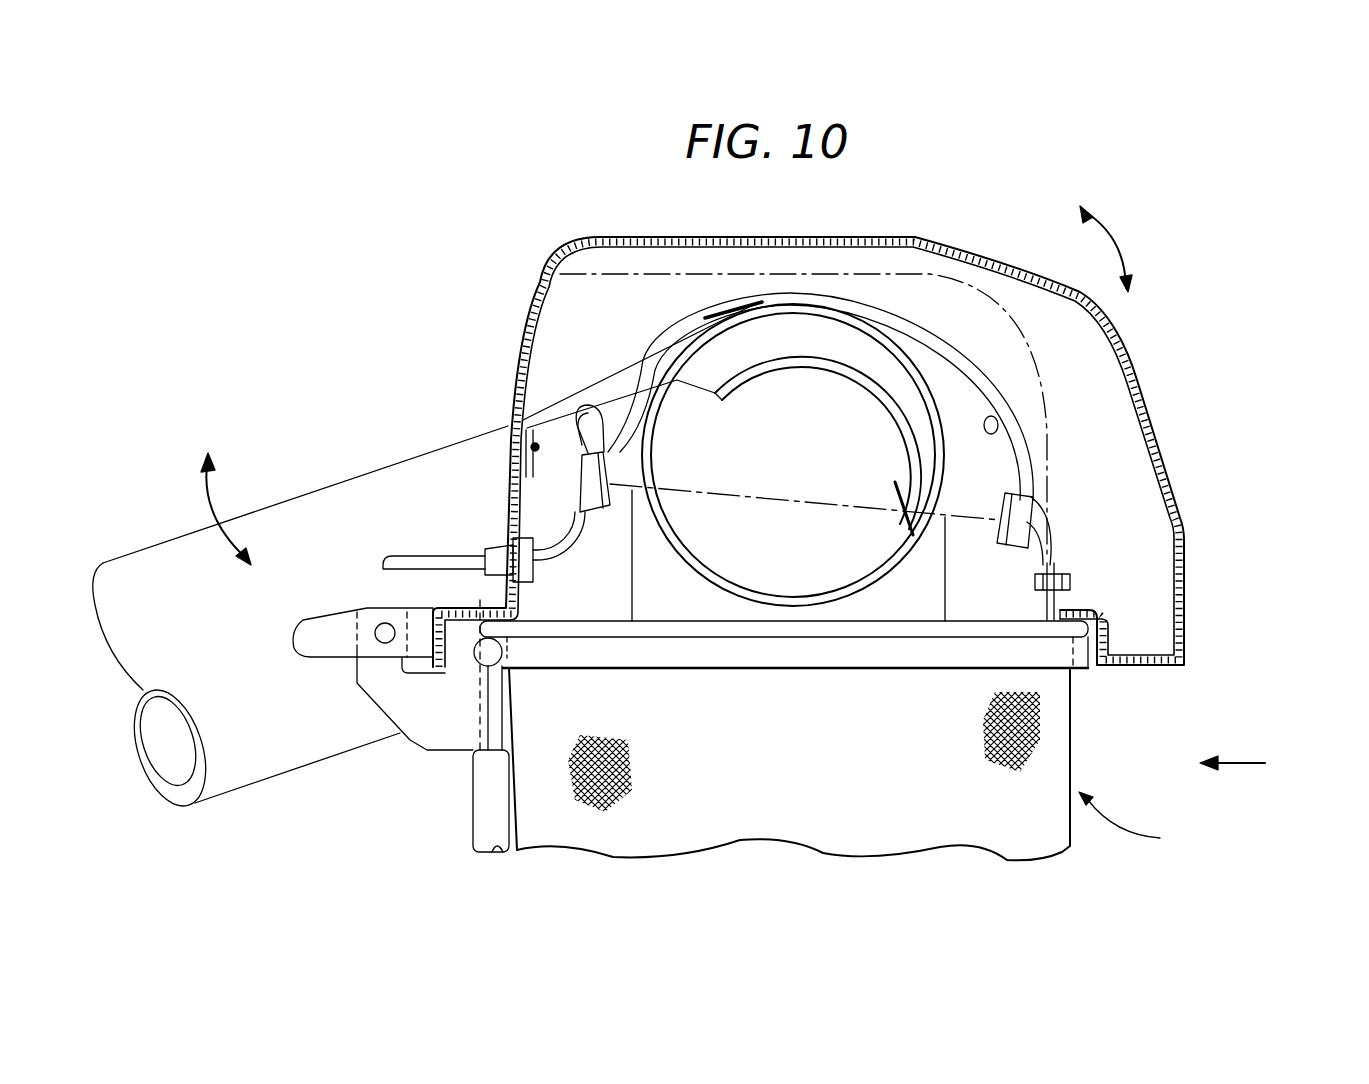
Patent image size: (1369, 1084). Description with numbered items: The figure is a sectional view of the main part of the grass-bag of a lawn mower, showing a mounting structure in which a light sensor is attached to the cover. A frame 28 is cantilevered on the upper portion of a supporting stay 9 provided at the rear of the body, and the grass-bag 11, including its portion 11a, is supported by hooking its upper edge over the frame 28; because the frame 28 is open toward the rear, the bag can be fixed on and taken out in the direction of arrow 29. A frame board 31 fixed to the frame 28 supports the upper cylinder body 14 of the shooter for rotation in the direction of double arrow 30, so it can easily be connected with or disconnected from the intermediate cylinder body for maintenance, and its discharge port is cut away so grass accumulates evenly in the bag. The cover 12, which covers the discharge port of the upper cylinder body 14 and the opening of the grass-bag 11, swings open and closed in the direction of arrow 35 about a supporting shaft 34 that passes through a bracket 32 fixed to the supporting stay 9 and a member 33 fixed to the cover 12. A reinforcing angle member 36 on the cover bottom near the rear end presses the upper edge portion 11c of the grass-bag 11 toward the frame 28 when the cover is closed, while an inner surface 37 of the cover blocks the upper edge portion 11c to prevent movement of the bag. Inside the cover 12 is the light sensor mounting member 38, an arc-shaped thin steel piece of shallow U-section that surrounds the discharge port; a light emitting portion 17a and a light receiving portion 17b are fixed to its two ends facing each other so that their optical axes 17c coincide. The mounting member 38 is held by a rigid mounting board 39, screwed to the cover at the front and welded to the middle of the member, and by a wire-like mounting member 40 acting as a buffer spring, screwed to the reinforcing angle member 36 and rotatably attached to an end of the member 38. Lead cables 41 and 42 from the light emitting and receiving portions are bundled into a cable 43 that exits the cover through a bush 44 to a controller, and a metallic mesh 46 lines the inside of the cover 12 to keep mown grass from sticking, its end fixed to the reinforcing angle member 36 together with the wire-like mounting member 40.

The supporting stay 9 is at (470, 795).
The grass-bag 11 is at (852, 764).
The grass-bag portion 11a is at (883, 847).
The upper edge portion of grass-bag 11c is at (1023, 630).
The cover 12 is at (1135, 364).
The upper cylinder body 14 is at (748, 382).
The light emitting portion 17a is at (578, 483).
The light receiving portion 17b is at (1030, 512).
The optical axis 17c is at (781, 503).
The frame 28 is at (843, 660).
The arrow 29 is at (1263, 762).
The double arrow 30 is at (226, 507).
The frame board 31 is at (680, 607).
The bracket 32 is at (427, 727).
The member 33 is at (330, 630).
The supporting shaft 34 is at (383, 643).
The arrow 35 is at (1120, 243).
The reinforcing angle member 36 is at (1053, 603).
The inner surface 37 is at (1093, 657).
The light sensor mounting member 38 is at (996, 427).
The mounting board 39 is at (560, 404).
The wire-like mounting member 40 is at (1057, 533).
The lead cable 41 is at (586, 420).
The lead cable 42 is at (993, 380).
The cable 43 is at (564, 546).
The bush 44 is at (485, 547).
The metallic mesh 46 is at (657, 274).